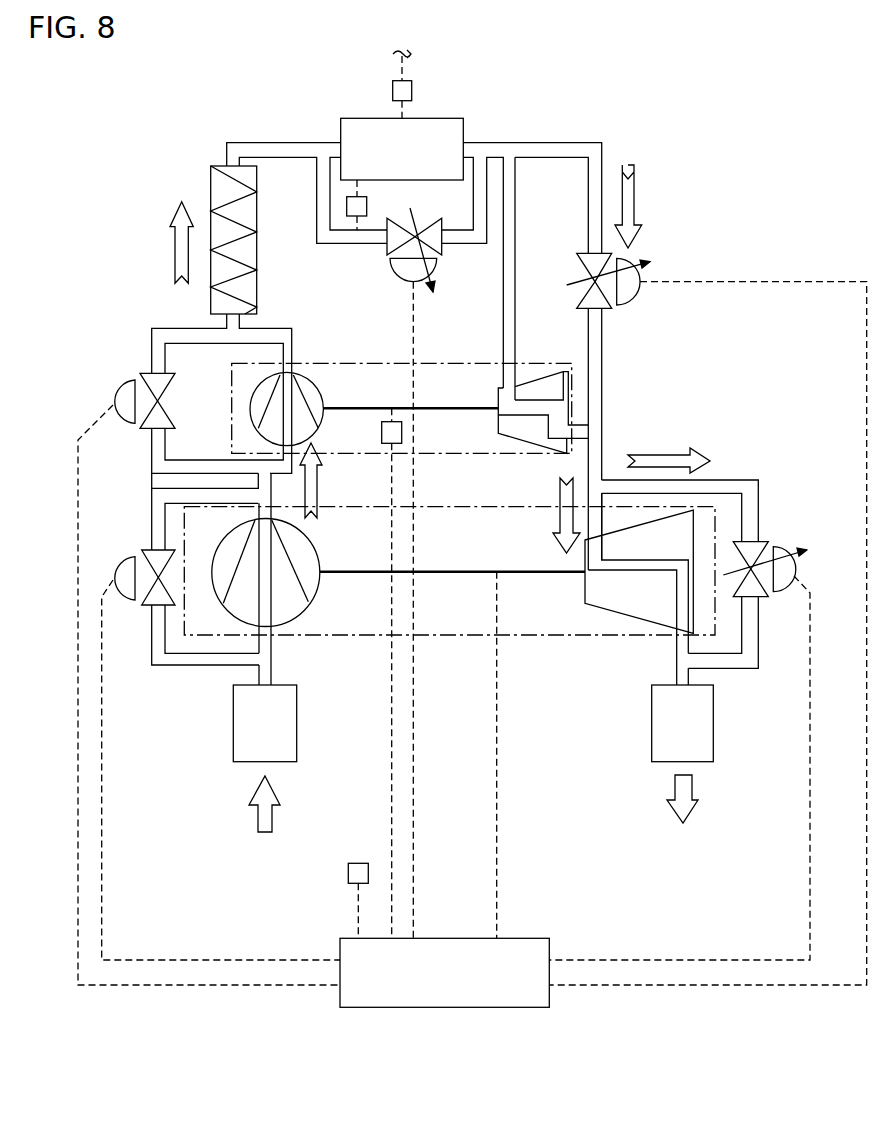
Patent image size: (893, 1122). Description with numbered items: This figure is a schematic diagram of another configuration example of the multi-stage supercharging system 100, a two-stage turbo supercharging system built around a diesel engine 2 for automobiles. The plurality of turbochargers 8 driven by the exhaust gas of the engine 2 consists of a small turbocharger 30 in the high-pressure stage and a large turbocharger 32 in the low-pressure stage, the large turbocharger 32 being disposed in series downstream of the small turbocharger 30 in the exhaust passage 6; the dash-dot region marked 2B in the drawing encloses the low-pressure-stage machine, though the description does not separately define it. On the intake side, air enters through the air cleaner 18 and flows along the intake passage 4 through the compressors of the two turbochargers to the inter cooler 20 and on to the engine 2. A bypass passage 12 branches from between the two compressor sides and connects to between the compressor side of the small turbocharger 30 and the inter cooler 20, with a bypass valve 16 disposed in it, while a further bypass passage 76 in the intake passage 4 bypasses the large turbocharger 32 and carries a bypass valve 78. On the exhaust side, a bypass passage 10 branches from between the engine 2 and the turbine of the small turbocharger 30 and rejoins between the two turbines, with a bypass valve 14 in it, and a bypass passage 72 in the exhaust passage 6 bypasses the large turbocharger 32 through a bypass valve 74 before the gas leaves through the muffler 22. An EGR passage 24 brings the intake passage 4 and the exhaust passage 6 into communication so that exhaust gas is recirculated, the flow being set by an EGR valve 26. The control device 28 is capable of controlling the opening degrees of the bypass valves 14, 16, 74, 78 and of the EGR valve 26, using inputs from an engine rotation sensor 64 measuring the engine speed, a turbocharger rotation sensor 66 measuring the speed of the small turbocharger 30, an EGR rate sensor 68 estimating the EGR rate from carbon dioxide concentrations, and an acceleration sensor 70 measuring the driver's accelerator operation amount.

The multi-stage supercharging system 100 is at (741, 57).
The engine 2 is at (450, 118).
The low-pressure turbocharger 2B is at (554, 640).
The intake passage 4 is at (274, 672).
The exhaust passage 6 is at (676, 673).
The plurality of turbochargers 8 is at (725, 398).
The bypass passage 10 is at (602, 332).
The bypass passage 12 is at (152, 444).
The bypass valve 14 is at (624, 253).
The bypass valve 16 is at (134, 380).
The air cleaner 18 is at (233, 720).
The inter cooler 20 is at (210, 172).
The muffler 22 is at (714, 718).
The EGR passage 24 is at (338, 244).
The EGR valve 26 is at (408, 278).
The control device 28 is at (493, 1008).
The small turbocharger 30 is at (576, 382).
The large turbocharger 32 is at (717, 516).
The engine rotation sensor 64 is at (412, 88).
The turbocharger rotation sensor 66 is at (382, 432).
The EGR rate sensor 68 is at (368, 205).
The acceleration sensor 70 is at (348, 871).
The bypass passage 72 is at (762, 616).
The bypass valve 74 is at (778, 546).
The bypass passage 76 is at (153, 615).
The bypass valve 78 is at (133, 557).